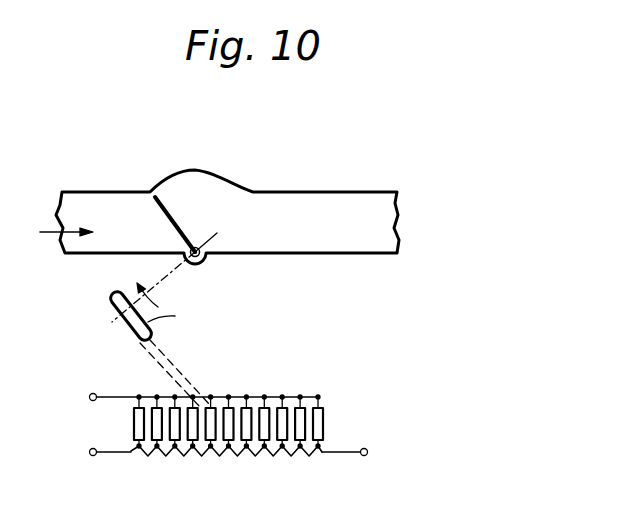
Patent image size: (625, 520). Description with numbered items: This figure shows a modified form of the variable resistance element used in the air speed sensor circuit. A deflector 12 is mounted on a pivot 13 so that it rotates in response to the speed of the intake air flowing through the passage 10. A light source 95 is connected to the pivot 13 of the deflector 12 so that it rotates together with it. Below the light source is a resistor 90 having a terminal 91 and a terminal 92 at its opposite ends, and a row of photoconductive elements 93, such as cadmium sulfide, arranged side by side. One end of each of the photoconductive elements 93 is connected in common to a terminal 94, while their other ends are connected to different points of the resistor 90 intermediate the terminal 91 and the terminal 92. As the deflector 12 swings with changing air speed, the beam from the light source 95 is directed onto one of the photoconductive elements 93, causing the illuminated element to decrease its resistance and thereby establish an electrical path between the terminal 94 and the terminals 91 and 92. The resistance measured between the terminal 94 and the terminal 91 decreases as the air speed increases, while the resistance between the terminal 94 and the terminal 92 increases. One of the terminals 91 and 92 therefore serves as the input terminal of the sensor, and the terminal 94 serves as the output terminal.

The passage 10 is at (126, 226).
The deflector 12 is at (173, 215).
The pivot 13 is at (205, 248).
The resistor 90 is at (222, 453).
The terminal 91 is at (90, 454).
The terminal 92 is at (366, 456).
The photoconductive elements 93 is at (302, 421).
The terminal 94 is at (90, 394).
The light source 95 is at (119, 313).